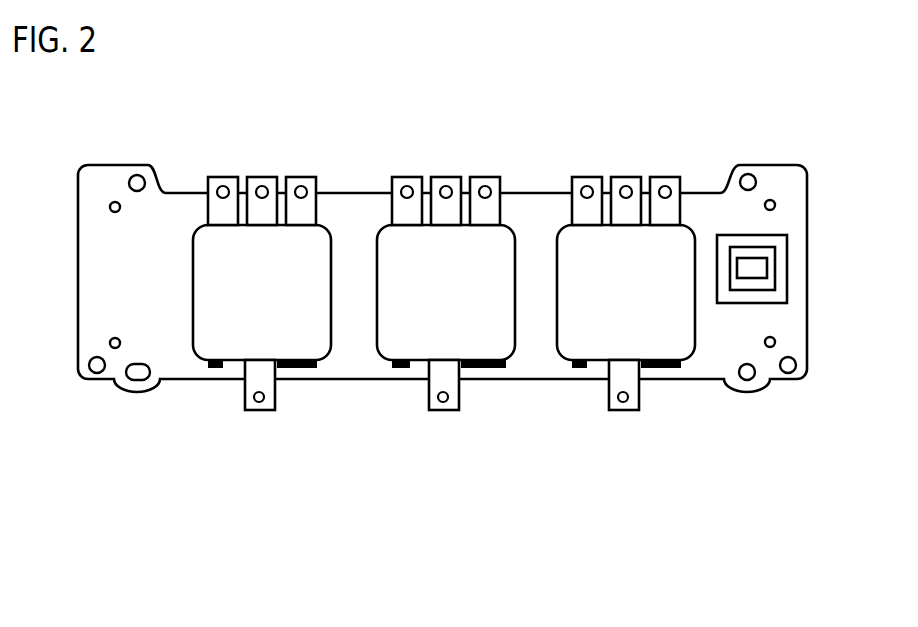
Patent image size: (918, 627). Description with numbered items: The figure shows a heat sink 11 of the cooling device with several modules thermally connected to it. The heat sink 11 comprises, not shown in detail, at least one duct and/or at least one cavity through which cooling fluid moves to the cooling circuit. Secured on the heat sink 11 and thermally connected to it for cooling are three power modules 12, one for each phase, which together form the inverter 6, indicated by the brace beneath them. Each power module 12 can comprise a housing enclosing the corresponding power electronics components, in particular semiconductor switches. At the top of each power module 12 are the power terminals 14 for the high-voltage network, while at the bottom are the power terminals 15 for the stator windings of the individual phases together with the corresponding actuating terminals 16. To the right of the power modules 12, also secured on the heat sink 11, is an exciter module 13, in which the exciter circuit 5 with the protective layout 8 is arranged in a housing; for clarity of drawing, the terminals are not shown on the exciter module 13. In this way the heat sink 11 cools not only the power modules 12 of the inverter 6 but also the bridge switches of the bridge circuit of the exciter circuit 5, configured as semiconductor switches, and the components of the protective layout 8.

The inverter 6 is at (195, 530).
The heat sink 11 is at (780, 183).
The power module 12 is at (312, 342).
The power terminal 14 is at (223, 176).
The power terminal 15 is at (255, 380).
The actuating terminal 16 is at (298, 378).
The exciter module 13 is at (788, 288).
The exciter circuit 5 is at (772, 262).
The protective layout 8 is at (752, 260).